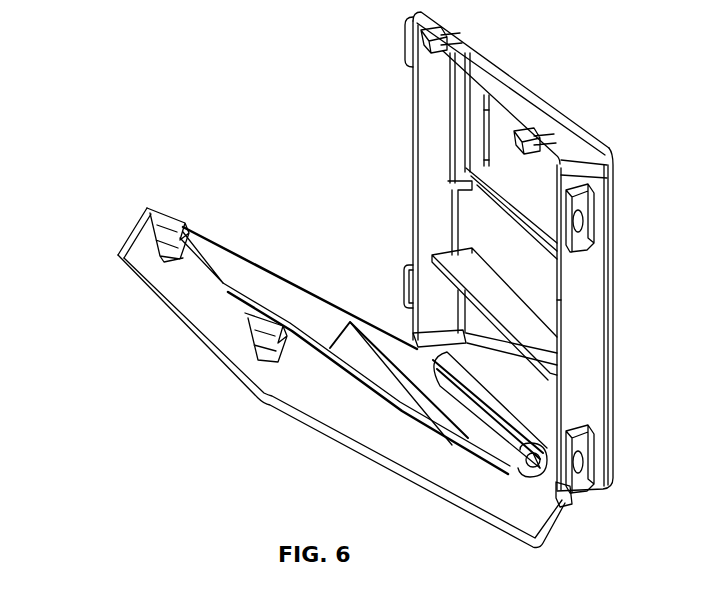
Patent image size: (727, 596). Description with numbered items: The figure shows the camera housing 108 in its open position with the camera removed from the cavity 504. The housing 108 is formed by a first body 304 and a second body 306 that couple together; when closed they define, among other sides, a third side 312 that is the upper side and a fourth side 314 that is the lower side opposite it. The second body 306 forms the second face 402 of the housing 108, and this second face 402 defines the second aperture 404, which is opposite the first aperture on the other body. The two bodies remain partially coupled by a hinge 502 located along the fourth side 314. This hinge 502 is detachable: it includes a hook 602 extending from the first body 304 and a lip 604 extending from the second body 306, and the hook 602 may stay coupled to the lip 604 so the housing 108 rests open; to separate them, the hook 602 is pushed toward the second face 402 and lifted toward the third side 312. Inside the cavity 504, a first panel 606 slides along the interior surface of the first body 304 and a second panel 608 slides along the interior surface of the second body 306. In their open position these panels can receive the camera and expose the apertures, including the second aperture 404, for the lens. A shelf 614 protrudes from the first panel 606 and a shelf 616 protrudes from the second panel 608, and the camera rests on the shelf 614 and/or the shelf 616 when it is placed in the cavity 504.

The housing 108 is at (110, 208).
The first body 304 is at (268, 397).
The second body 306 is at (598, 164).
The third side 312 is at (500, 67).
The fourth side 314 is at (592, 494).
The second face 402 is at (593, 126).
The second aperture 404 is at (514, 166).
The hinge 502 is at (446, 368).
The cavity 504 is at (301, 218).
The hook 602 is at (510, 440).
The lip 604 is at (566, 497).
The first panel 606 is at (308, 357).
The second panel 608 is at (546, 290).
The shelf 614 is at (384, 388).
The shelf 616 is at (540, 346).